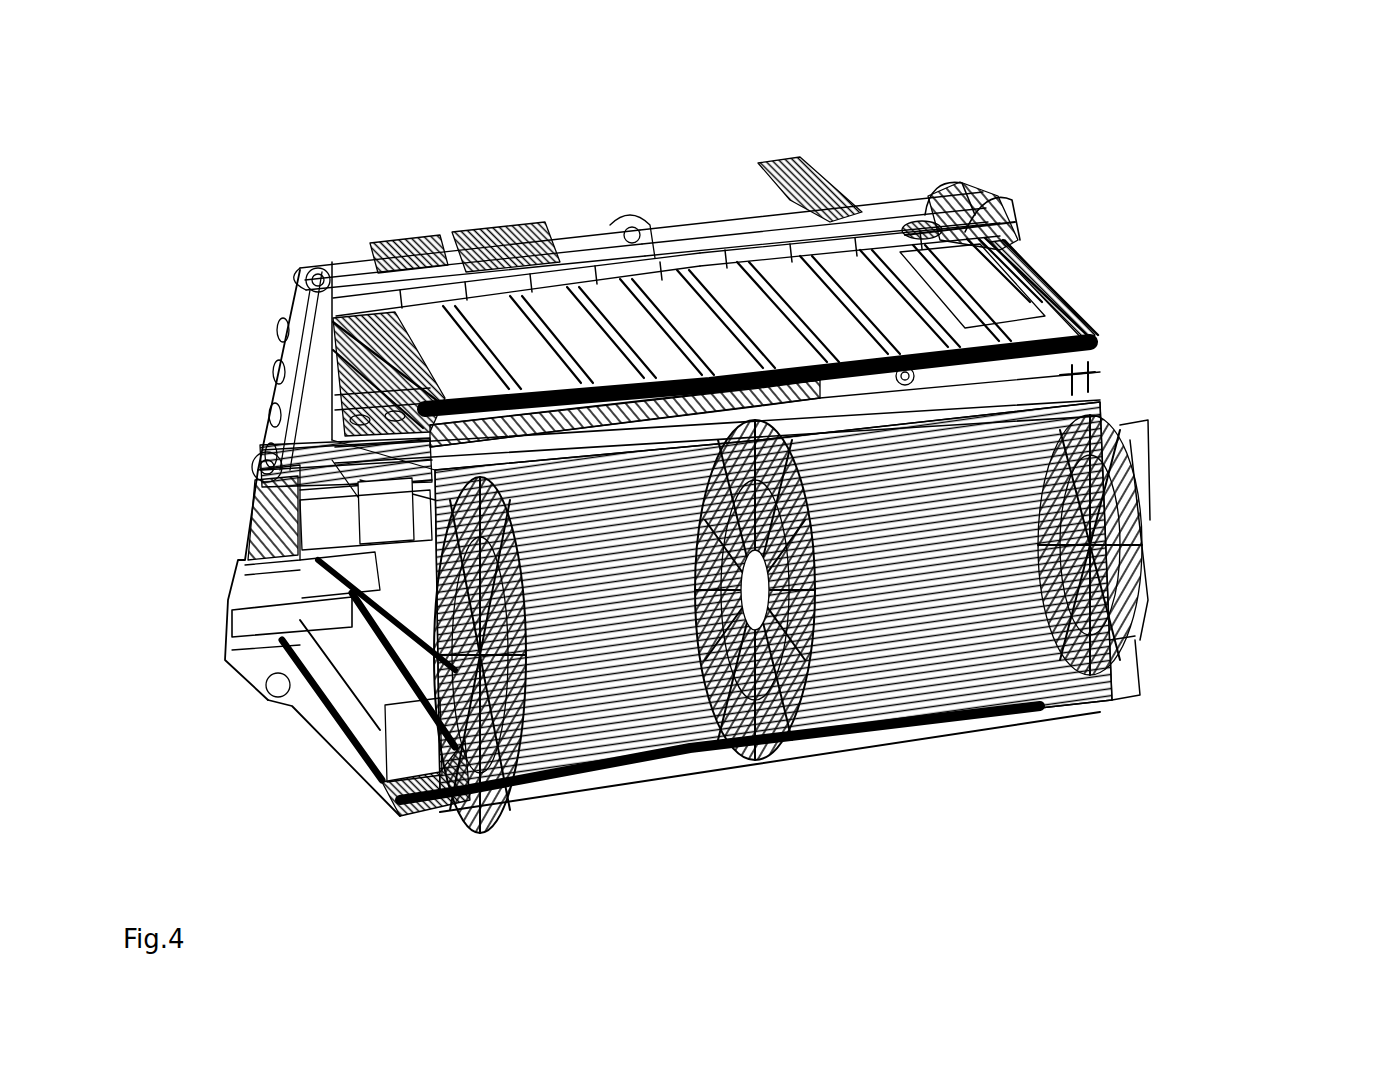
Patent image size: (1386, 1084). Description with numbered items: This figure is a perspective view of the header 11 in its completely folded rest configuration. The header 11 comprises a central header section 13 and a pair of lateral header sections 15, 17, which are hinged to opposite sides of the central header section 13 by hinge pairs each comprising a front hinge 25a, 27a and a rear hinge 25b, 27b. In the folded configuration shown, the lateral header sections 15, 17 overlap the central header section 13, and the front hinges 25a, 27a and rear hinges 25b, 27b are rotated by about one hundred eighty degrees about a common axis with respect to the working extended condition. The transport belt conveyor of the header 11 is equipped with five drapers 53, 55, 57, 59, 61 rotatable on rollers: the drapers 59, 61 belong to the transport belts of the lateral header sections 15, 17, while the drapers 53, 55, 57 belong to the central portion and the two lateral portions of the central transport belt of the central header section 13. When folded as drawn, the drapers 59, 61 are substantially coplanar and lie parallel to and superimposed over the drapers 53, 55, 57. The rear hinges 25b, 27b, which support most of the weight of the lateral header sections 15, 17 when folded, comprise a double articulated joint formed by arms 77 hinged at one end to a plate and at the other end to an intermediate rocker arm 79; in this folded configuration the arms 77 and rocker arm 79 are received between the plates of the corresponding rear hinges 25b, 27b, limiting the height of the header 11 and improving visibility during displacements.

The header 11 is at (1220, 792).
The central header section 13 is at (424, 878).
The lateral header section 15 is at (293, 228).
The lateral header section 17 is at (618, 183).
The front hinge 25a is at (468, 665).
The rear hinge 25b is at (212, 449).
The front hinge 27a is at (1140, 585).
The rear hinge 27b is at (1095, 377).
The draper 53 is at (700, 690).
The draper 55 is at (355, 652).
The draper 57 is at (893, 563).
The draper 59 is at (460, 385).
The draper 61 is at (1010, 232).
The arms 77 is at (955, 277).
The intermediate rocker arm 79 is at (853, 400).